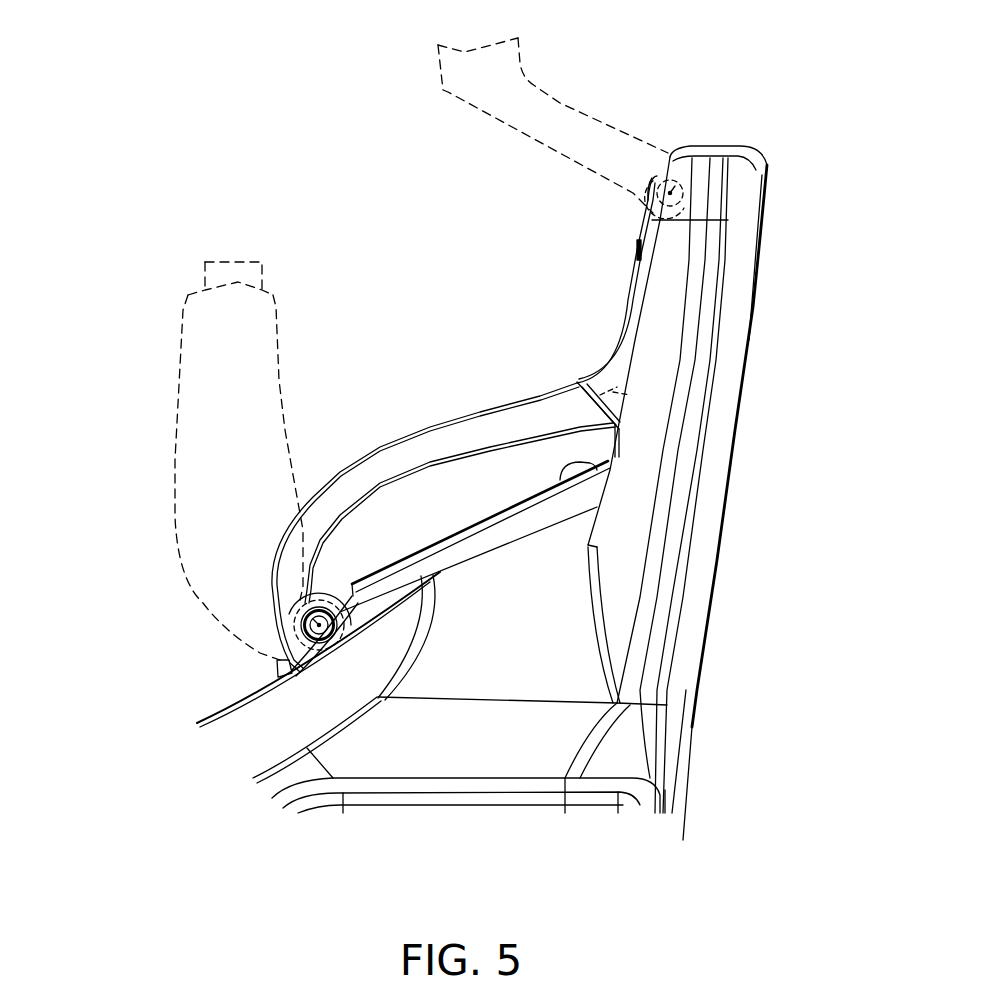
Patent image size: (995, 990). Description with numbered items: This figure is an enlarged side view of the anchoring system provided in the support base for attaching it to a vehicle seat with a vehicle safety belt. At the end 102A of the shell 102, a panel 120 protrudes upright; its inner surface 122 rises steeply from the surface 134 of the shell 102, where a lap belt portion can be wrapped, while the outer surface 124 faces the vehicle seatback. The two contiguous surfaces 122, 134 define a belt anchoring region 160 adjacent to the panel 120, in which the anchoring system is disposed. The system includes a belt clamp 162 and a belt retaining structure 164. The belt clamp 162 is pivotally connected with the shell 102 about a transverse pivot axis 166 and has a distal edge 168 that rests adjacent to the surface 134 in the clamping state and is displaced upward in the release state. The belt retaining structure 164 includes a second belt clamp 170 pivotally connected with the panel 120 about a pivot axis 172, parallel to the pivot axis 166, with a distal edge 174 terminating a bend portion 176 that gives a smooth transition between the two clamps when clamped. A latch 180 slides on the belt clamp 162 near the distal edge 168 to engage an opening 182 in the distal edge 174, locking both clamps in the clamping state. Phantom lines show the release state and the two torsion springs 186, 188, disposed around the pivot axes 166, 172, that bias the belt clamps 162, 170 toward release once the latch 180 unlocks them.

The shell 102 is at (683, 777).
The end of the shell 102A is at (712, 728).
The panel 120 is at (727, 152).
The surface 122 is at (640, 302).
The surface 124 is at (753, 310).
The surface 134 is at (540, 600).
The belt anchoring region 160 is at (368, 232).
The belt clamp 162 is at (437, 443).
The belt retaining structure 164 is at (624, 214).
The pivot axis 166 is at (300, 607).
The distal edge 168 is at (573, 403).
The belt clamp 170 is at (636, 245).
The pivot axis 172 is at (677, 162).
The distal edge 174 is at (592, 378).
The bend portion 176 is at (620, 345).
The latch 180 is at (620, 400).
The opening 182 is at (600, 390).
The spring 186 is at (350, 597).
The spring 188 is at (668, 150).